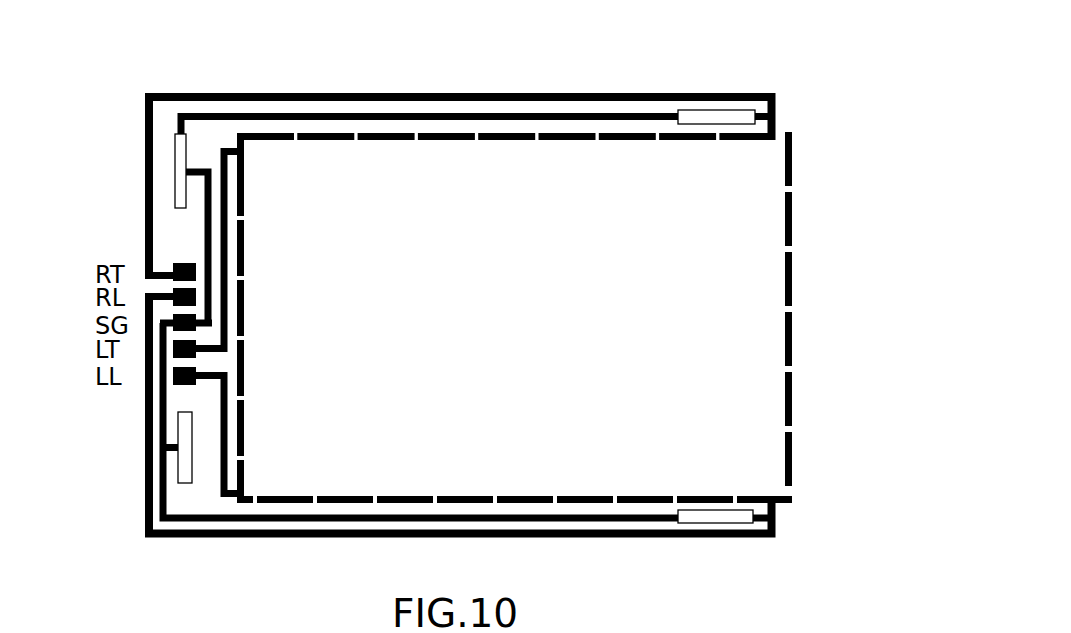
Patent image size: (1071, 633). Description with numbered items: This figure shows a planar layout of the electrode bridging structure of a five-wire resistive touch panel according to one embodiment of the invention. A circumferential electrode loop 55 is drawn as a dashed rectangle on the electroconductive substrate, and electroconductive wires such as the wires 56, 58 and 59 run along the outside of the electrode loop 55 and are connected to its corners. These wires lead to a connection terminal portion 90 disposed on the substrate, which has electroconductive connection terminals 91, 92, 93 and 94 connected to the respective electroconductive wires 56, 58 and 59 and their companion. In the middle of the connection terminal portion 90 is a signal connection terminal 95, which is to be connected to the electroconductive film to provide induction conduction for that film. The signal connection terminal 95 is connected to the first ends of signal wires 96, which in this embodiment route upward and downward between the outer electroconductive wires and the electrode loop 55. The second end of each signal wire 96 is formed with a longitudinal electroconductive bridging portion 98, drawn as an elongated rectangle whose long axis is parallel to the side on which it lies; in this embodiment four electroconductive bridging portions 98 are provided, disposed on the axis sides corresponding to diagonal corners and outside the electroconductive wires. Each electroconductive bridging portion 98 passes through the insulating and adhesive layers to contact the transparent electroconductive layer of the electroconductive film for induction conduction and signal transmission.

The electrode loop 55 is at (367, 132).
The electroconductive wire 56 is at (472, 93).
The electroconductive wire 58 is at (337, 538).
The electroconductive wire 59 is at (218, 440).
The connection terminal portion 90 is at (160, 249).
The electroconductive connection terminal 91 is at (183, 262).
The electroconductive connection terminal 92 is at (142, 276).
The electroconductive connection terminal 93 is at (170, 386).
The electroconductive connection terminal 94 is at (165, 370).
The signal connection terminal 95 is at (148, 306).
The signal wire 96 is at (238, 113).
The electroconductive bridging portion 98 is at (176, 150).